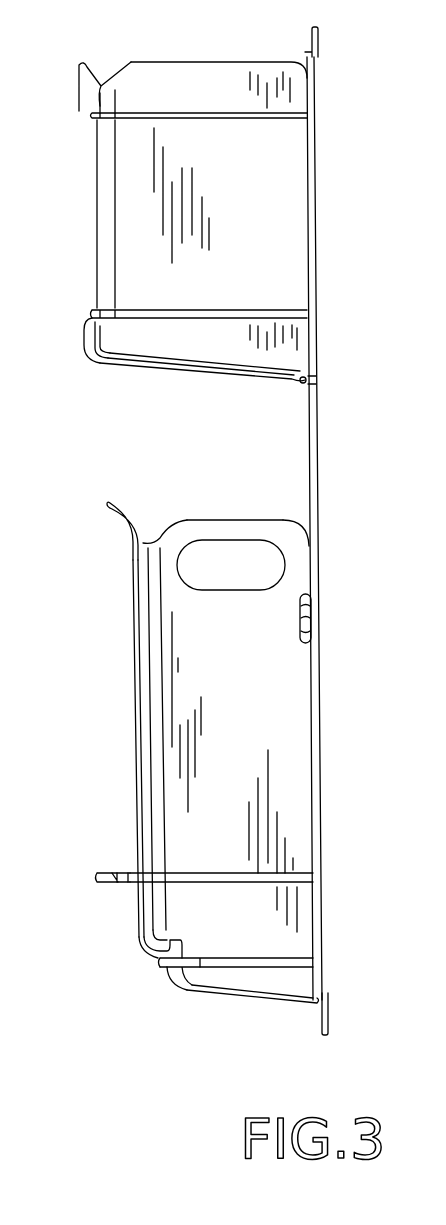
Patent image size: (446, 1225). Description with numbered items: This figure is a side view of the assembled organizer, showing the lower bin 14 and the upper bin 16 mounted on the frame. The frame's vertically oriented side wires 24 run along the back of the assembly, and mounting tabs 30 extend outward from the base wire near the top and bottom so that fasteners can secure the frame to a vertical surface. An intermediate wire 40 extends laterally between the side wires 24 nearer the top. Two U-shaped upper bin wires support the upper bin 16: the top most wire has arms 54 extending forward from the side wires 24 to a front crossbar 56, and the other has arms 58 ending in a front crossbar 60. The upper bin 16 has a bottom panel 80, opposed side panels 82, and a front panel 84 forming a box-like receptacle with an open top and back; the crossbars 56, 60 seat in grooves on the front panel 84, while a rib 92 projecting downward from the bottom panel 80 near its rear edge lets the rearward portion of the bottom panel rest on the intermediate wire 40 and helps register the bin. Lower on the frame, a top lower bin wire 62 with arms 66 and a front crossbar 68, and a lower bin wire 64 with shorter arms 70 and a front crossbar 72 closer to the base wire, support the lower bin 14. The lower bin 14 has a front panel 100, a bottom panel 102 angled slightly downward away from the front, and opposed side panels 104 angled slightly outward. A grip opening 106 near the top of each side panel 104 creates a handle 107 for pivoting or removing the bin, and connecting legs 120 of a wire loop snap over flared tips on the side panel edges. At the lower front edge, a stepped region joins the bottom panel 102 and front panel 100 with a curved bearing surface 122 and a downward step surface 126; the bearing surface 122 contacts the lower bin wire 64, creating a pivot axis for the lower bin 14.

The lower bin 14 is at (118, 636).
The upper bin 16 is at (78, 186).
The side wires 24 is at (316, 244).
The mounting tabs 30 is at (316, 43).
The intermediate wire 40 is at (309, 379).
The arms 54 is at (183, 113).
The front crossbar 56 is at (90, 113).
The arms 58 is at (200, 310).
The front crossbar 60 is at (90, 310).
The top lower bin wire 62 is at (117, 892).
The lower bin wire 64 is at (247, 947).
The arms 66 is at (227, 870).
The front crossbar 68 is at (97, 873).
The arms 70 is at (160, 960).
The front crossbar 72 is at (275, 963).
The bottom panel 80 is at (140, 367).
The side panels 82 is at (270, 167).
The front panel 84 is at (97, 245).
The rib 92 is at (293, 381).
The front panel 100 is at (137, 743).
The bottom panel 102 is at (232, 995).
The side panels 104 is at (280, 703).
The grip opening 106 is at (200, 552).
The handle 107 is at (247, 527).
The connecting legs 120 is at (311, 615).
The bearing surface 122 is at (157, 957).
The downward step surface 126 is at (167, 973).